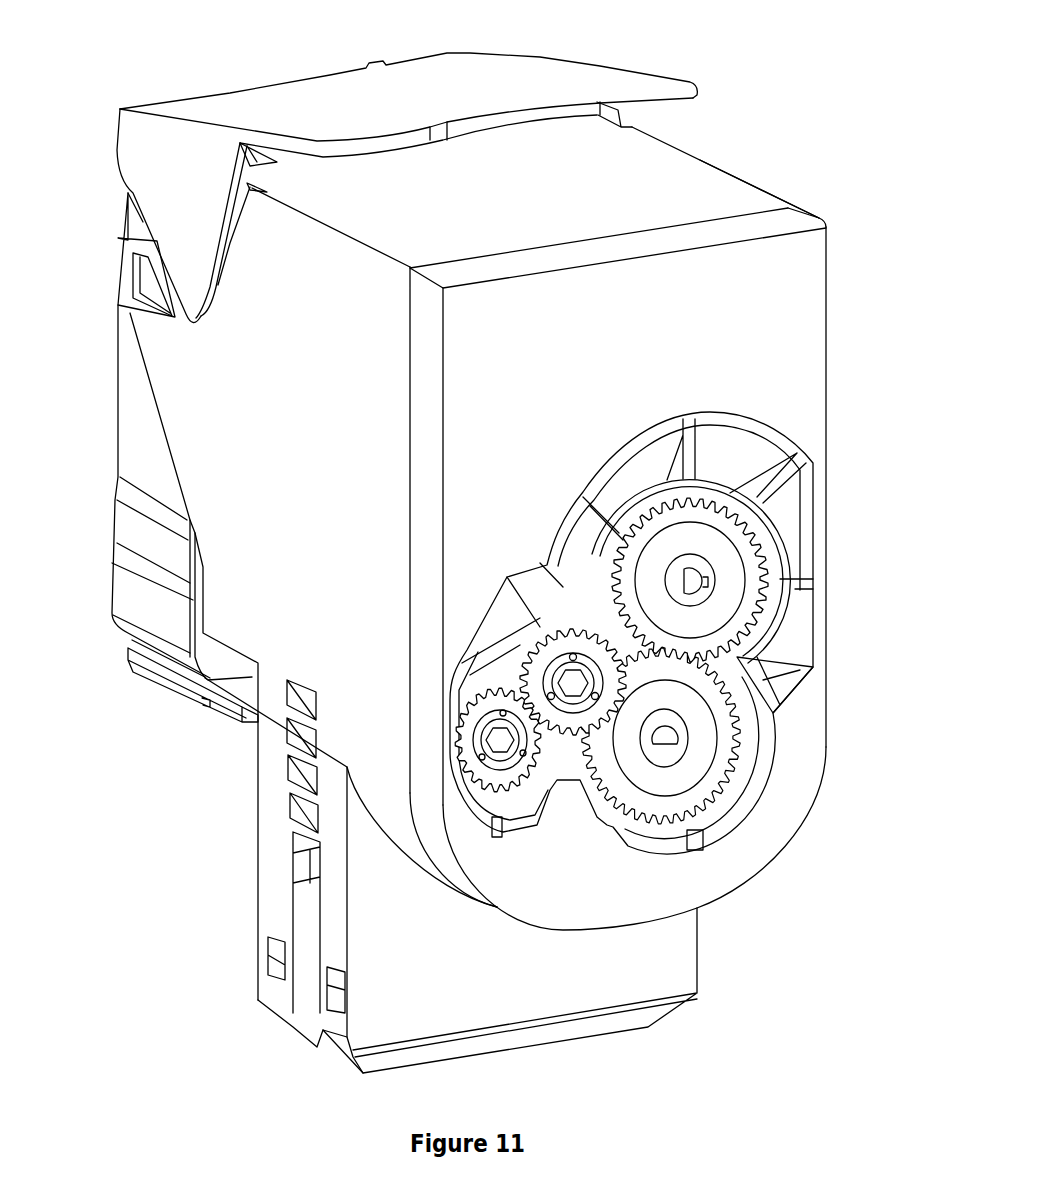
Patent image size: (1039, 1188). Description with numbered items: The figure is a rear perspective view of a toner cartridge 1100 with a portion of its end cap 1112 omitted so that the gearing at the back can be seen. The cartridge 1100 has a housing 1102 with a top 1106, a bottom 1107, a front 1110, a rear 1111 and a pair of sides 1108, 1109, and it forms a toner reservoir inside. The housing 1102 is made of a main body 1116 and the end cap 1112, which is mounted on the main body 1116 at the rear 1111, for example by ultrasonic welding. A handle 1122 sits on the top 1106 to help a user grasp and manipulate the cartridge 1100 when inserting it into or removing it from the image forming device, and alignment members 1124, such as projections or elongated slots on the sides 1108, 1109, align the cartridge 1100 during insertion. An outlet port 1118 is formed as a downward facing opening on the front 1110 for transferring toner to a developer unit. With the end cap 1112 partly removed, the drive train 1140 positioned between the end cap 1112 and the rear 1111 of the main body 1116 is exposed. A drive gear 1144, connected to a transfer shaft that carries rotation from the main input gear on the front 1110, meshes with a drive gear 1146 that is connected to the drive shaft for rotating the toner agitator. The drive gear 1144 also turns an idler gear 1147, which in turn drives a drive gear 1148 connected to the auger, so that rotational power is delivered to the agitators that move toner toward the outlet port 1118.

The toner cartridge 1100 is at (777, 62).
The handle 1122 is at (513, 65).
The top 1106 is at (570, 150).
The housing 1102 is at (662, 157).
The side 1108 is at (730, 173).
The main body 1116 is at (747, 203).
The end cap 1112 is at (795, 223).
The rear 1111 is at (780, 323).
The front 1110 is at (120, 335).
The side 1109 is at (180, 400).
The outlet port 1118 is at (184, 718).
The alignment member 1124 is at (312, 1060).
The bottom 1107 is at (542, 1050).
The drive train 1140 is at (735, 797).
The drive gear 1144 is at (762, 560).
The drive gear 1146 is at (740, 747).
The idler gear 1147 is at (570, 730).
The drive gear 1148 is at (477, 797).